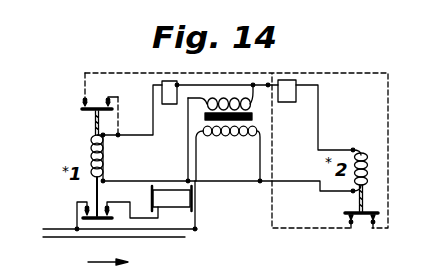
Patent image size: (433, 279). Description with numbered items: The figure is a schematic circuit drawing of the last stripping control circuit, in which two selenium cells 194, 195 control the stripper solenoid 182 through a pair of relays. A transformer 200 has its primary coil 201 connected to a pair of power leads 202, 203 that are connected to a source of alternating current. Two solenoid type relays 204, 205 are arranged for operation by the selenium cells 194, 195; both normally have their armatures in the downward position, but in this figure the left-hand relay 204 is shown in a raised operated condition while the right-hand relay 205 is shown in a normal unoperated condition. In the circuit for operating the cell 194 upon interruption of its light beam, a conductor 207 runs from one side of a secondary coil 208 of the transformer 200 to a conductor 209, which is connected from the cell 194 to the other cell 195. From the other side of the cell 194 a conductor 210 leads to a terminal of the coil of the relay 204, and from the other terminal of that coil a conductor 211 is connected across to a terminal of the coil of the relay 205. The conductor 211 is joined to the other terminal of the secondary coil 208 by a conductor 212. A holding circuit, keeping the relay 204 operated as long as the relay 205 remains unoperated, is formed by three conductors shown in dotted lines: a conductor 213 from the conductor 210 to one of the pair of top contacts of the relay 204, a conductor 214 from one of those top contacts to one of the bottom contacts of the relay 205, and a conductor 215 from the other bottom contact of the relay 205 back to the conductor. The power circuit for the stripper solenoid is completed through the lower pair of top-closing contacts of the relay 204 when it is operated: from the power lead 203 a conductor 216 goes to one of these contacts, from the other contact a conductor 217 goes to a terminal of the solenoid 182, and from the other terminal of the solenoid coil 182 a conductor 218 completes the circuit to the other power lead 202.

The double armature solenoid 182 is at (171, 189).
The selenium cell 194 is at (171, 101).
The selenium cell 195 is at (291, 101).
The transformer 200 is at (211, 98).
The primary coil 201 is at (240, 137).
The power lead 202 is at (65, 237).
The power lead 203 is at (55, 229).
The solenoid type relay 204 is at (92, 158).
The solenoid type relay 205 is at (372, 139).
The conductor 207 is at (257, 83).
The secondary coil 208 is at (238, 97).
The conductor 209 is at (193, 83).
The conductor 210 is at (144, 135).
The conductor 211 is at (133, 180).
The conductor 212 is at (187, 146).
The conductor 213 is at (120, 100).
The conductor 214 is at (390, 125).
The conductor 215 is at (322, 229).
The conductor 216 is at (76, 204).
The conductor 217 is at (143, 219).
The conductor 218 is at (196, 218).